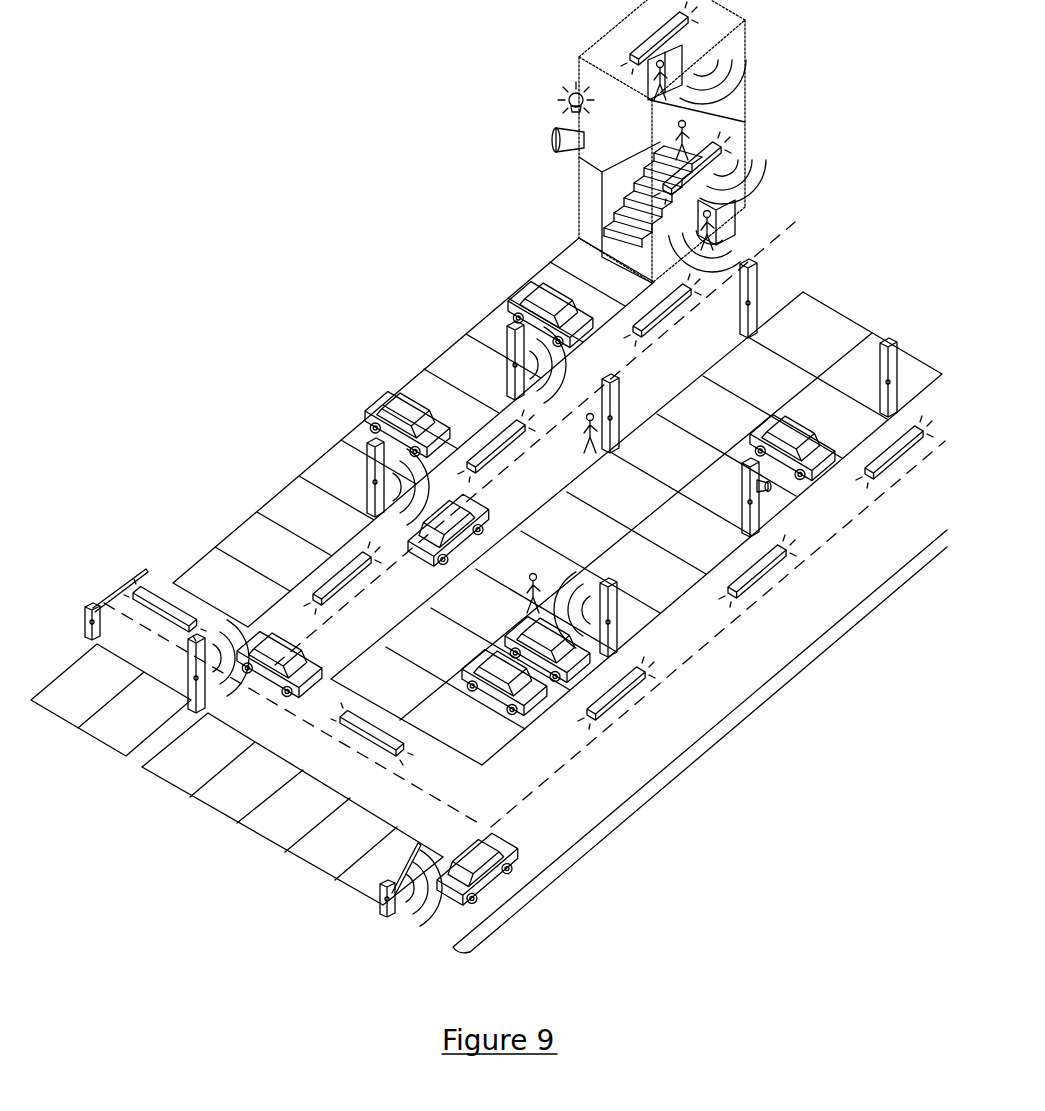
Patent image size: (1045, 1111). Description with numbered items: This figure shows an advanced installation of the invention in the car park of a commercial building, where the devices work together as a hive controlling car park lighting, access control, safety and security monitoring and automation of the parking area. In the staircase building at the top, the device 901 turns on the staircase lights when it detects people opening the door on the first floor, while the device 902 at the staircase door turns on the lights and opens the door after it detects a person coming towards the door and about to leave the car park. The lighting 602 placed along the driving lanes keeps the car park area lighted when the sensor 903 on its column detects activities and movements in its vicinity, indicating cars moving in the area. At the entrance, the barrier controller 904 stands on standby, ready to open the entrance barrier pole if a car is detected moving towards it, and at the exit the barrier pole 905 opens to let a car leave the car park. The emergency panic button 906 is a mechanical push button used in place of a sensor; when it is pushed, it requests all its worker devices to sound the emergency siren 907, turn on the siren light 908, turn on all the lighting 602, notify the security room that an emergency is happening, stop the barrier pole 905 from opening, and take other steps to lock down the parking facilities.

The staircase light controller 901 is at (732, 62).
The staircase door controller 902 is at (737, 250).
The activity sensor 903 is at (365, 455).
The entrance barrier controller 904 is at (95, 600).
The exit barrier pole 905 is at (378, 905).
The emergency panic button 906 is at (622, 627).
The emergency siren 907 is at (547, 145).
The siren light 908 is at (553, 80).
The lighting 602 is at (347, 590).